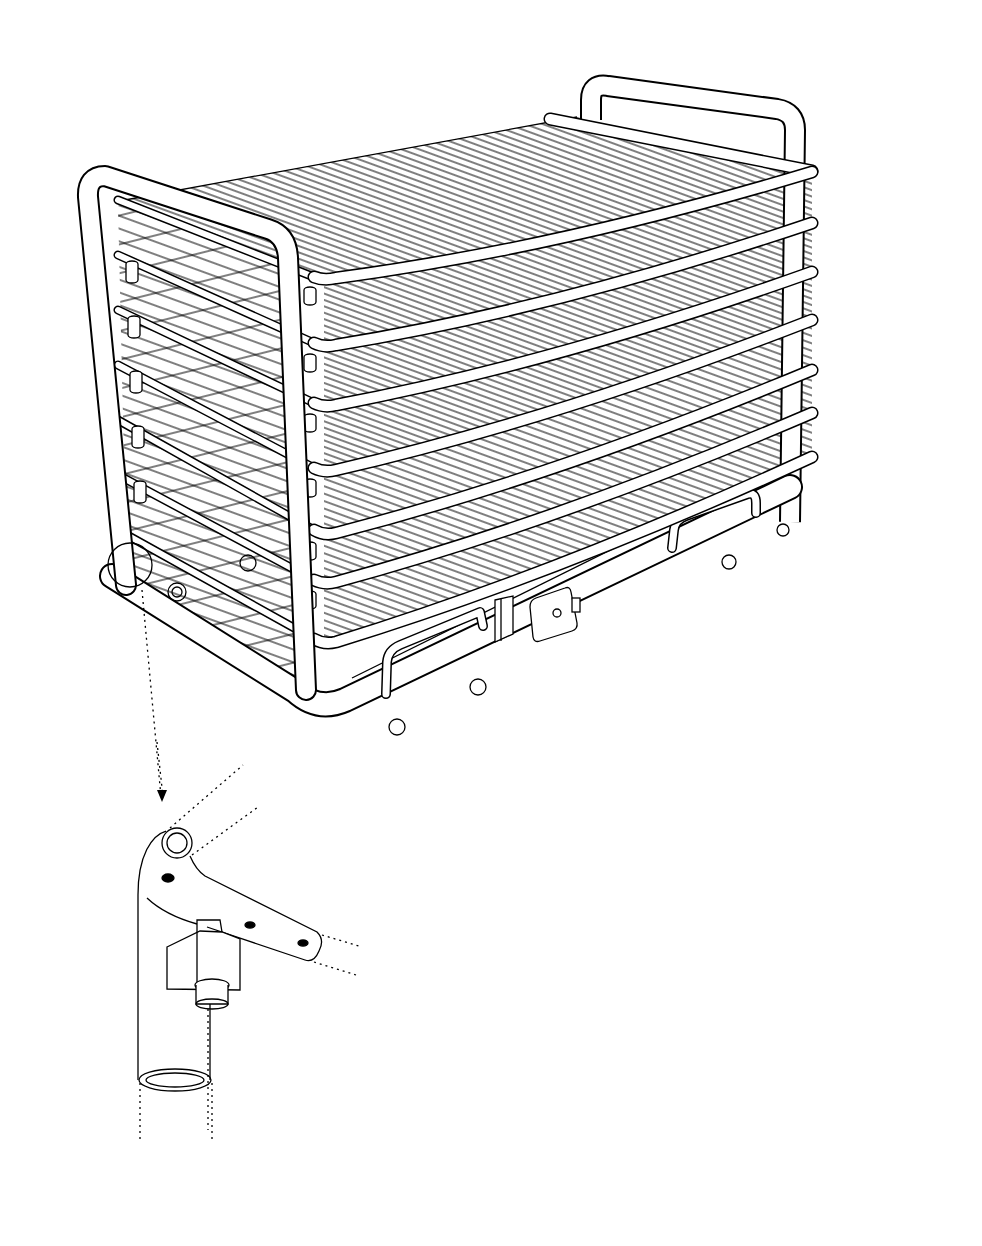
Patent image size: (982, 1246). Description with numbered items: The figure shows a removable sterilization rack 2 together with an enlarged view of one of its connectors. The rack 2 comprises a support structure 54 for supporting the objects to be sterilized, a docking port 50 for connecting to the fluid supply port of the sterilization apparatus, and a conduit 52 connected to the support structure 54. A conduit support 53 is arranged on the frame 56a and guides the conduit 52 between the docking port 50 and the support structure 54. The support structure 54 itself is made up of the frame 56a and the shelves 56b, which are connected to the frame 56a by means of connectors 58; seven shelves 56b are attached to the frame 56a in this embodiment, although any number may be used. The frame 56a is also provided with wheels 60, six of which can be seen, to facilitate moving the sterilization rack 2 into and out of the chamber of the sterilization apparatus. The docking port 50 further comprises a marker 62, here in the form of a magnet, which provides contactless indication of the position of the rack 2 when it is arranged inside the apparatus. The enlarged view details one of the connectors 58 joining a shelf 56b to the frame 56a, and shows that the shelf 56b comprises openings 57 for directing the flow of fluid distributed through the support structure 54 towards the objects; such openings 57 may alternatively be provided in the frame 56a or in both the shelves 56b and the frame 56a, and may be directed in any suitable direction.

The sterilization rack 2 is at (235, 92).
The docking port 50 is at (553, 628).
The conduit 52 is at (461, 640).
The conduit support 53 is at (503, 628).
The support structure 54 is at (780, 474).
The frame 56a is at (113, 458).
The shelves 56b is at (781, 360).
The openings 57 is at (253, 930).
The connectors 58 is at (142, 586).
The wheels 60 is at (681, 538).
The marker 62 is at (586, 614).